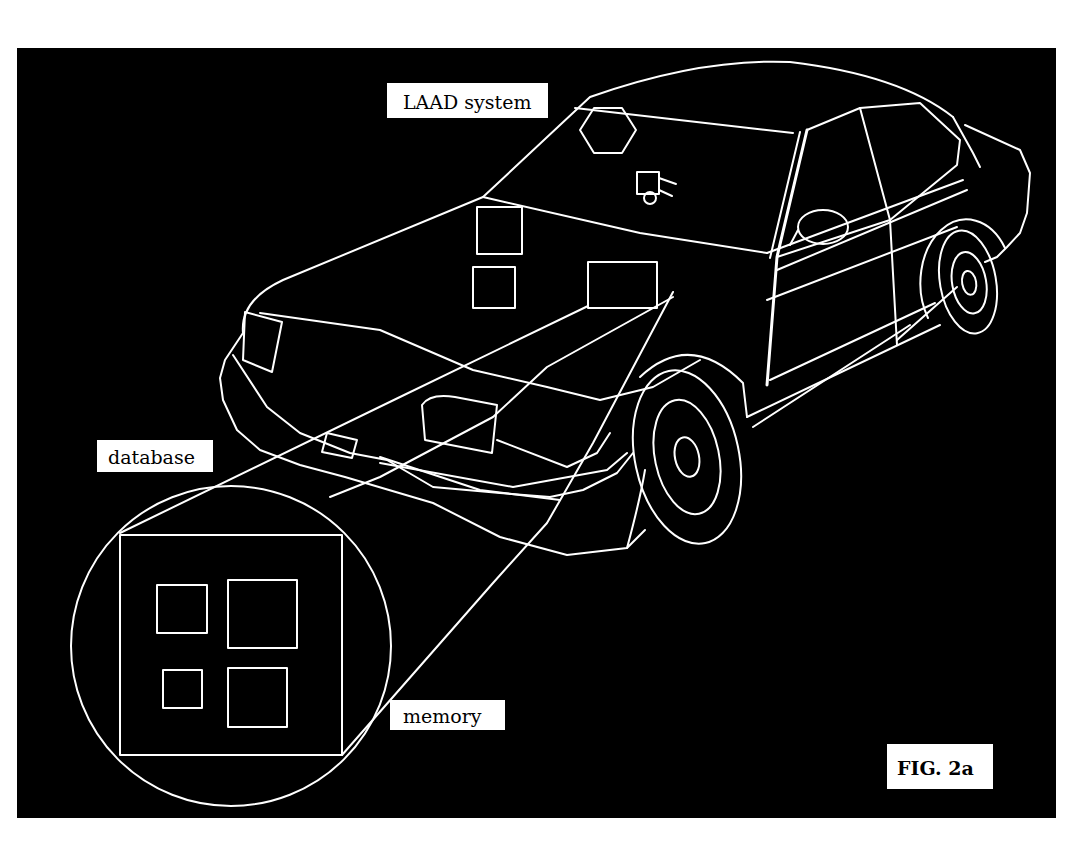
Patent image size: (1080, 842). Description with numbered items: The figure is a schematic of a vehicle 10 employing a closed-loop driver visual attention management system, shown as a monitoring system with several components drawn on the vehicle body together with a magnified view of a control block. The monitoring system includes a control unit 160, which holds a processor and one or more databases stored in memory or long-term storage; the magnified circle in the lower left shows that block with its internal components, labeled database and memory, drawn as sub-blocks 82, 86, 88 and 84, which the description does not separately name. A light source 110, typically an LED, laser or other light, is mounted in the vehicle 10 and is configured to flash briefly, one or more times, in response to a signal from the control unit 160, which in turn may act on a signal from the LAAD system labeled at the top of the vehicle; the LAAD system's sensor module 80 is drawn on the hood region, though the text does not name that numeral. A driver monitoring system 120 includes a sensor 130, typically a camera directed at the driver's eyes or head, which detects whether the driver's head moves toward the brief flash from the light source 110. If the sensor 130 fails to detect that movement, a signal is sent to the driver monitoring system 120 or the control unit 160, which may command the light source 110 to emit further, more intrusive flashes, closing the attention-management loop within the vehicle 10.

The vehicle 10 is at (625, 308).
The sensor module 80 is at (478, 205).
The processor 82 is at (170, 617).
The memory 84 is at (287, 723).
The database 86 is at (297, 612).
The communication unit 88 is at (163, 710).
The light source 110 is at (598, 108).
The driver monitoring system 120 is at (467, 273).
The sensor 130 is at (662, 172).
The control unit 160 is at (775, 367).